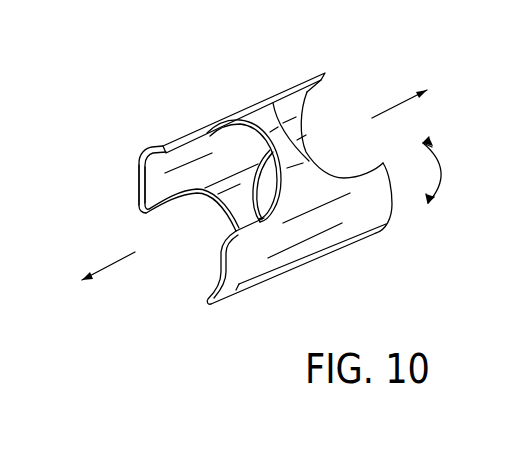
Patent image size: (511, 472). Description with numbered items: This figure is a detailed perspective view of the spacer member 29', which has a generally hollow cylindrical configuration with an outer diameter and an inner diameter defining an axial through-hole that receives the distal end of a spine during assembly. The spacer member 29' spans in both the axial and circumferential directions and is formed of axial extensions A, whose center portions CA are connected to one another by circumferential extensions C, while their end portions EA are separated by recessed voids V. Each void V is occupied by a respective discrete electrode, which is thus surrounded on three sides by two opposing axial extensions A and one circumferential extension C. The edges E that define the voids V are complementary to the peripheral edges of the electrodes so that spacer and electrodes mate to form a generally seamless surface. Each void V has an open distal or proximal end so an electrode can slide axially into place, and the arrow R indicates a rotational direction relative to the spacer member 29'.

The spacer member 29' is at (232, 136).
The edges E is at (252, 102).
The axial extensions A is at (175, 140).
The recessed voids V is at (218, 140).
The circumferential extensions C is at (228, 215).
The end portions EA is at (378, 222).
The center portions CA is at (313, 246).
The rotation direction R is at (443, 170).